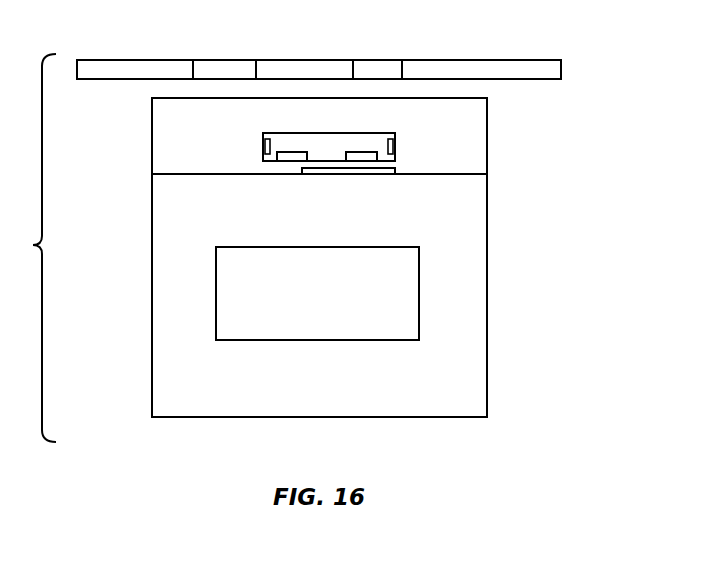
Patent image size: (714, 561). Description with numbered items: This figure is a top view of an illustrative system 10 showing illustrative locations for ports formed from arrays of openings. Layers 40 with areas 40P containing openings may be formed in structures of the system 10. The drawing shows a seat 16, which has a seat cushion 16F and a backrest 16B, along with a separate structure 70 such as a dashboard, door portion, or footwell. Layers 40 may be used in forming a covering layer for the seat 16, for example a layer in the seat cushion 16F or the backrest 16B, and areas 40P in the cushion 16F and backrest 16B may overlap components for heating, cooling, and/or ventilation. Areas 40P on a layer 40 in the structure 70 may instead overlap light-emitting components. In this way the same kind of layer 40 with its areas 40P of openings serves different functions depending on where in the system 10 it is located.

The system 10 is at (32, 248).
The seat 16 is at (369, 257).
The backrest 16B is at (480, 141).
The seat cushion 16F is at (483, 368).
The layer 40 is at (111, 80).
The area 40P is at (229, 68).
The structure 70 is at (561, 69).